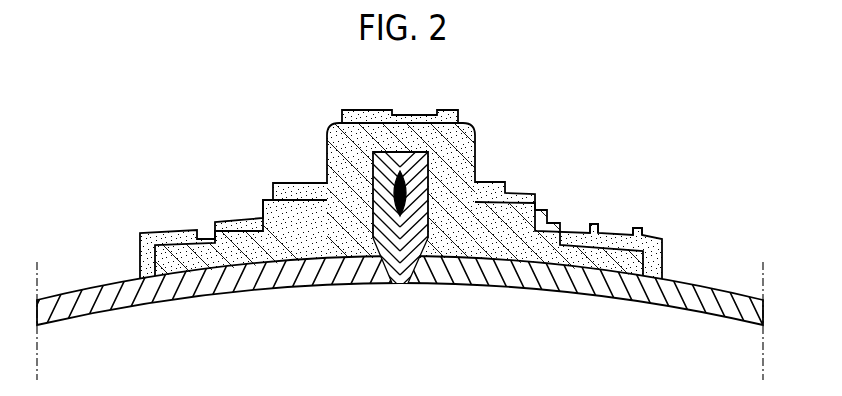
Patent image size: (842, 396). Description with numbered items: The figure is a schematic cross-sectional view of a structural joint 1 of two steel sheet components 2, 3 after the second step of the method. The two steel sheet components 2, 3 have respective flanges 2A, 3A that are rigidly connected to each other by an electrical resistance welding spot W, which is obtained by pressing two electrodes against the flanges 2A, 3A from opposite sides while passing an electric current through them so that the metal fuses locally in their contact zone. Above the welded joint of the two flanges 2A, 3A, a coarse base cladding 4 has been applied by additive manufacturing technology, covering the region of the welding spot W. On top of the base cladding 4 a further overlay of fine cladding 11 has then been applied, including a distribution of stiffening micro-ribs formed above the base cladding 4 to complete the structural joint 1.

The structural joint 1 is at (573, 128).
The steel sheet component 2 is at (106, 283).
The flange 2A is at (373, 156).
The steel sheet component 3 is at (713, 283).
The flange 3A is at (428, 158).
The base cladding 4 is at (550, 252).
The fine cladding 11 is at (618, 228).
The electrical resistance welding spot W is at (389, 238).